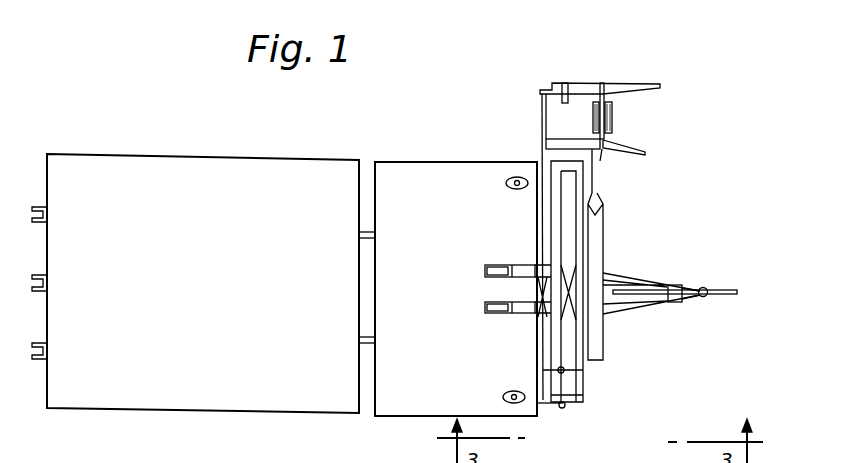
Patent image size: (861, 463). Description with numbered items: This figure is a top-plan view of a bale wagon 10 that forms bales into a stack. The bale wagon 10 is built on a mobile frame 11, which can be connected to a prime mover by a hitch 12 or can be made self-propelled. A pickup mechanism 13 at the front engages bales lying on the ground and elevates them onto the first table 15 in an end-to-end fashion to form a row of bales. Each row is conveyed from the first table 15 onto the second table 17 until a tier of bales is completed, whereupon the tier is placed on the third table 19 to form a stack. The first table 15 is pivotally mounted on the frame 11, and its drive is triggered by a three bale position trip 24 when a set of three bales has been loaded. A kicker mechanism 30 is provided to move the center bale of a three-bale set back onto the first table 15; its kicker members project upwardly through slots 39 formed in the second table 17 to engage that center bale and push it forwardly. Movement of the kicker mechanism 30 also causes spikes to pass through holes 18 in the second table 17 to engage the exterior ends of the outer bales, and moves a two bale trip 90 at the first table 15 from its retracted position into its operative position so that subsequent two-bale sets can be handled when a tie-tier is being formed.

The bale wagon 10 is at (145, 115).
The mobile frame 11 is at (630, 273).
The hitch 12 is at (704, 297).
The pickup mechanism 13 is at (588, 83).
The first table 15 is at (583, 380).
The second table 17 is at (403, 162).
The holes 18 is at (516, 177).
The third table 19 is at (212, 160).
The three bale position trip 24 is at (566, 405).
The kicker mechanism 30 is at (500, 278).
The slots 39 is at (523, 265).
The two bale trip 90 is at (566, 370).